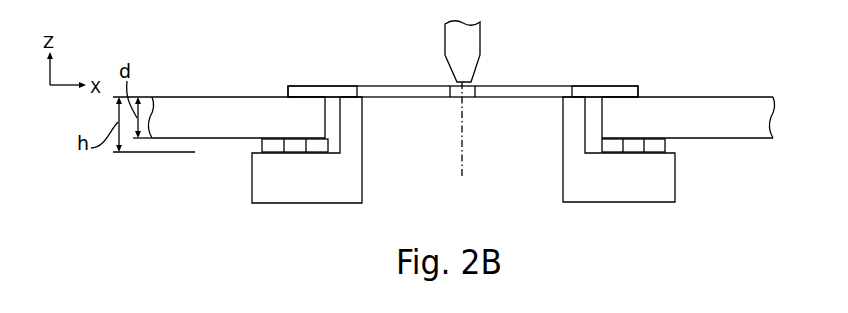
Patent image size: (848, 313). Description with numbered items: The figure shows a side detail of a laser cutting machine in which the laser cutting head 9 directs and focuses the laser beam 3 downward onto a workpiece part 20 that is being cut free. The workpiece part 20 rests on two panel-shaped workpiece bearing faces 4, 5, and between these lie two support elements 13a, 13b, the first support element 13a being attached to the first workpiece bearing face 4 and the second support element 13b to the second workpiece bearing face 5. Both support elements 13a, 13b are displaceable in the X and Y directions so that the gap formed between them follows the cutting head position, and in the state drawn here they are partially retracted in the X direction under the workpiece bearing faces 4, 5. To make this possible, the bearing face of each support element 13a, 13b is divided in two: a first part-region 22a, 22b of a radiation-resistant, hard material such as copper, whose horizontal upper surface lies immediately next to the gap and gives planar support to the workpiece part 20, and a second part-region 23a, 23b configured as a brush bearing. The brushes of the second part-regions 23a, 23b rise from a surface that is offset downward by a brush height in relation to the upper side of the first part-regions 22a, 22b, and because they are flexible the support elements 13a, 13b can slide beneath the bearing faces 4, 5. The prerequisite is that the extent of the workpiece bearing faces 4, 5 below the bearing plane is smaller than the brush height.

The laser beam 3 is at (462, 135).
The first workpiece bearing face 4 is at (188, 115).
The second workpiece bearing face 5 is at (735, 112).
The laser cutting head 9 is at (465, 47).
The first support element 13a is at (232, 181).
The second support element 13b is at (695, 181).
The workpiece part 20 is at (500, 92).
The first part-region of first support element bearing face 22a is at (354, 95).
The first part-region of second support element bearing face 22b is at (573, 95).
The second part-region of first support element bearing face 23a is at (309, 134).
The second part-region of second support element bearing face 23b is at (615, 134).